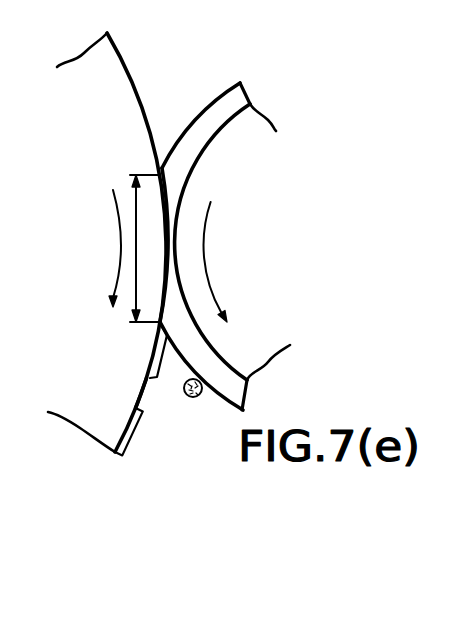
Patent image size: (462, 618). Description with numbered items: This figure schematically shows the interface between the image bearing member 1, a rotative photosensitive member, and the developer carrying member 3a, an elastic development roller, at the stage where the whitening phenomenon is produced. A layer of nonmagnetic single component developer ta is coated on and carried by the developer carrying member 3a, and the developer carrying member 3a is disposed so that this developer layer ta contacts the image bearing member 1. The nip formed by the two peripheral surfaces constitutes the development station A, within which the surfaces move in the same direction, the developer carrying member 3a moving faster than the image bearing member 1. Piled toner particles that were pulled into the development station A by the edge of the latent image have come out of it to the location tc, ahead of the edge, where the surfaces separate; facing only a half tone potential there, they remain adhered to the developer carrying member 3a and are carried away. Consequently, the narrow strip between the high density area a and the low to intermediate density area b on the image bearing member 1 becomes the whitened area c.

The image bearing member 1 is at (133, 72).
The developer carrying member 3a is at (258, 163).
The layer of nonmagnetic single component developer ta is at (233, 102).
The development station A is at (168, 248).
The high density area a is at (157, 378).
The low to intermediate density area b is at (135, 428).
The whitened area c is at (148, 397).
The location ahead of the edge of the latent image tc is at (197, 398).